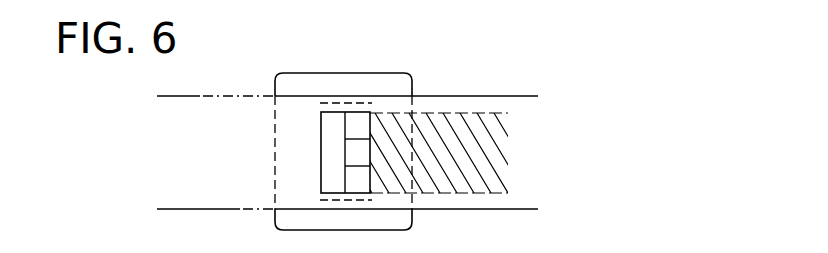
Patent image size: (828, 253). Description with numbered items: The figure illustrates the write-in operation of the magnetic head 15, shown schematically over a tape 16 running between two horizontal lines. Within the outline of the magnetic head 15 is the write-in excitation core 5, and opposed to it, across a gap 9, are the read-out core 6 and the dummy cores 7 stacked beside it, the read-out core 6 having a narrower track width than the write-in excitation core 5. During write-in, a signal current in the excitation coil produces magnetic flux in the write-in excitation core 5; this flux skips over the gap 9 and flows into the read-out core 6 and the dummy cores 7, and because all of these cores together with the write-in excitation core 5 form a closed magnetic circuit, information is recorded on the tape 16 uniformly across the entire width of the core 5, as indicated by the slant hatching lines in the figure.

The write-in excitation core 5 is at (322, 187).
The read-out core 6 is at (357, 150).
The dummy cores 7 is at (356, 120).
The gap 9 is at (344, 112).
The magnetic head 15 is at (385, 72).
The tape 16 is at (240, 103).